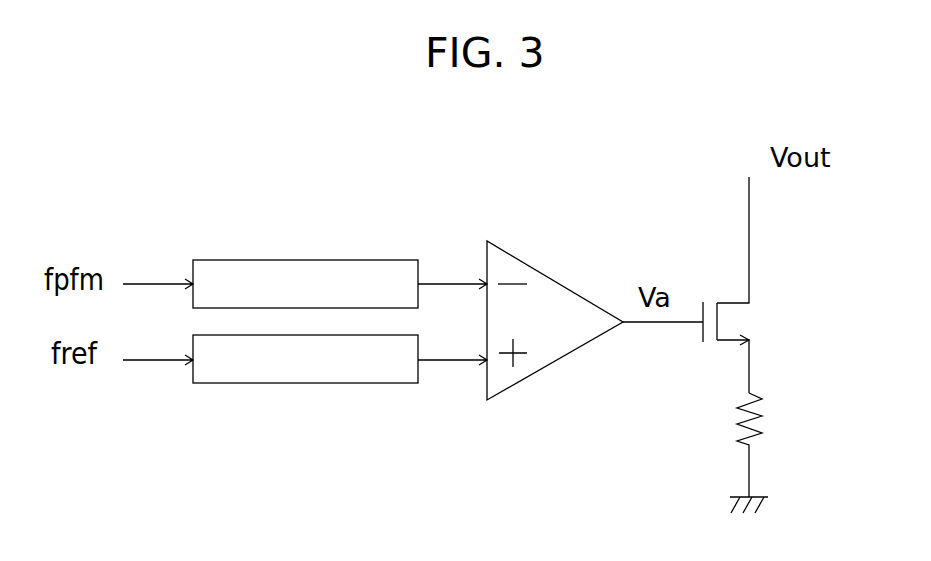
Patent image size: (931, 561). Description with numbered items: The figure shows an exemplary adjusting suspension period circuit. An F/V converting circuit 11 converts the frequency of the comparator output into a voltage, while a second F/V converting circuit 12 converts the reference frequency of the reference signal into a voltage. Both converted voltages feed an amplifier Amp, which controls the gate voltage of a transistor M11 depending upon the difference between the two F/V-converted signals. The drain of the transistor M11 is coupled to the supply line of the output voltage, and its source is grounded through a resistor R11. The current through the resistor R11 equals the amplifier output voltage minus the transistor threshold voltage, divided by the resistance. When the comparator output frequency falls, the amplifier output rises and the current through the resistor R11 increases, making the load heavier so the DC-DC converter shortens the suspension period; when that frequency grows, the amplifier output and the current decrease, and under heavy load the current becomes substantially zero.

The F/V converting circuit 11 is at (382, 260).
The F/V converting circuit 12 is at (380, 383).
The amplifier Amp is at (555, 308).
The transistor M11 is at (764, 285).
The resistor R11 is at (781, 445).